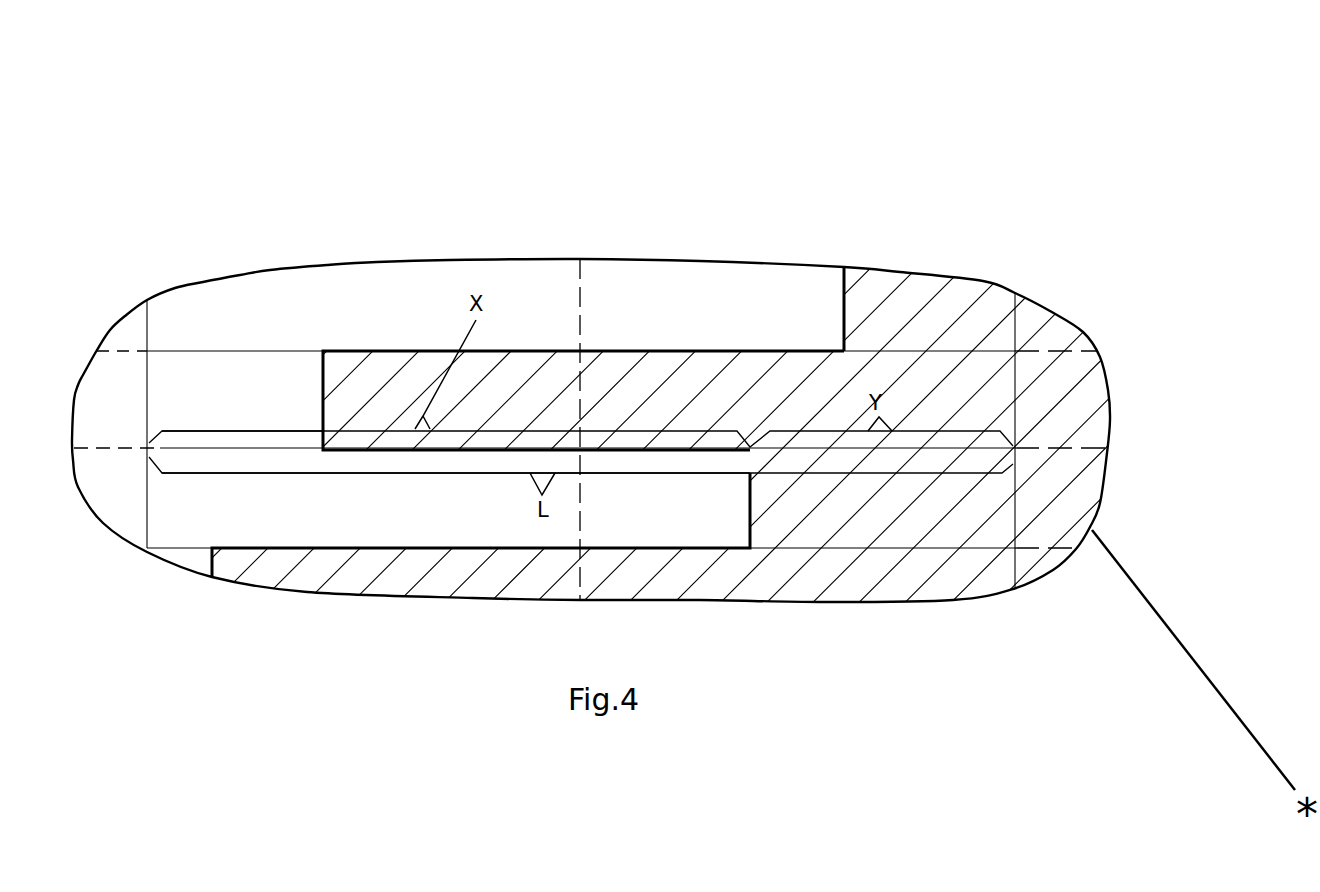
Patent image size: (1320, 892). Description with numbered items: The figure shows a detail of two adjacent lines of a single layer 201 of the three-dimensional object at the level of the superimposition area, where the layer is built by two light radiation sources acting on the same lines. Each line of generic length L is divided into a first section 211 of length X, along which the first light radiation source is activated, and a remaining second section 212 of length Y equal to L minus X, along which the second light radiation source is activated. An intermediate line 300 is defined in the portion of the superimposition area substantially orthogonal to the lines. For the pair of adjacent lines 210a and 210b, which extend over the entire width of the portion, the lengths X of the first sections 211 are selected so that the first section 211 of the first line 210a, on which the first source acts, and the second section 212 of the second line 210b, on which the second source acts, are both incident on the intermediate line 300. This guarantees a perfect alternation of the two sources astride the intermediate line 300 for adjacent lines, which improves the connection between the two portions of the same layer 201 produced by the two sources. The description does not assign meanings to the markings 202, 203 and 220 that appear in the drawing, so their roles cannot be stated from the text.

The layer 201 is at (546, 163).
The first end 202 is at (180, 261).
The second end 203 is at (990, 263).
The first section 211 is at (210, 380).
The second section 212 is at (965, 385).
The step 220 is at (847, 283).
The intermediate line 300 is at (583, 300).
The first line 210a is at (1048, 503).
The second line 210b is at (1045, 402).